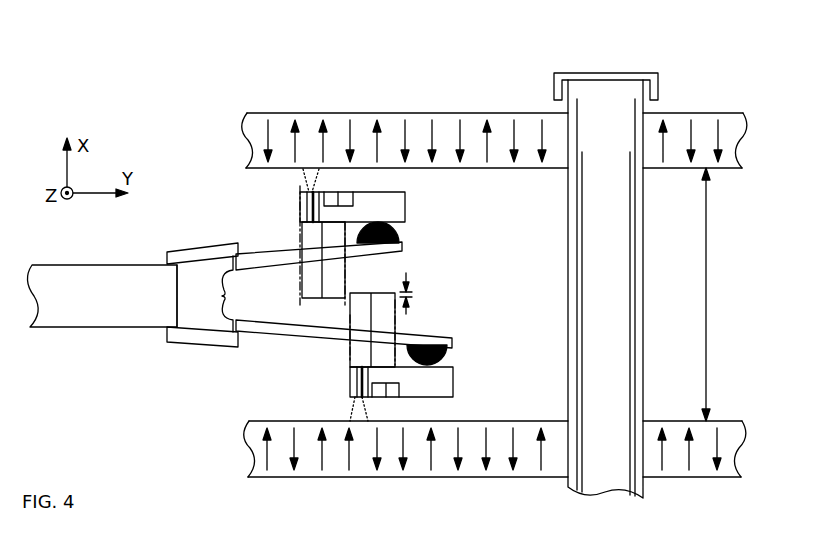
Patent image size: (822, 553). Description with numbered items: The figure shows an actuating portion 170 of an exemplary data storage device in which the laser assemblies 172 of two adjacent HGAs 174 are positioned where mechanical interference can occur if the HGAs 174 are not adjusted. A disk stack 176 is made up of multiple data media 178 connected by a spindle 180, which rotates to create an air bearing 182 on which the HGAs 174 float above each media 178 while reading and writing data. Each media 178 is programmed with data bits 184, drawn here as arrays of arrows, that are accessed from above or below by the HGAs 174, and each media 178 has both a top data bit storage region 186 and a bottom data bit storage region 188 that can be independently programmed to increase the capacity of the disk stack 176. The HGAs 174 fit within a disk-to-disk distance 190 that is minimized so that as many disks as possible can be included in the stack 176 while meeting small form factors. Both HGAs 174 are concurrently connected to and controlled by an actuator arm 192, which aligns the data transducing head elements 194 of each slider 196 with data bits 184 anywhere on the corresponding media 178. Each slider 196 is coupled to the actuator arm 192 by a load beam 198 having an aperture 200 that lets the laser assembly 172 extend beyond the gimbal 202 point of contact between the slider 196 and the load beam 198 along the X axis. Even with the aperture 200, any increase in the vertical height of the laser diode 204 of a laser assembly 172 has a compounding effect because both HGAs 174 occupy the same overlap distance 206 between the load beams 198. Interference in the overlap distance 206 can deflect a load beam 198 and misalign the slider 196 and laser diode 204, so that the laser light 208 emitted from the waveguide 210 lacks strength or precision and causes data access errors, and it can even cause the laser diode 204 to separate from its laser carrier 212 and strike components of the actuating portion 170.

The actuating portion 170 is at (160, 82).
The laser assembly 172 is at (298, 277).
The HGA 174 is at (440, 233).
The disk stack 176 is at (718, 72).
The data media 178 is at (246, 122).
The spindle 180 is at (606, 70).
The air bearing 182 is at (425, 180).
The data bits 184 is at (350, 113).
The top data bit storage region 186 is at (738, 112).
The bottom data bit storage region 188 is at (735, 168).
The disk-to-disk distance 190 is at (724, 294).
The actuator arm 192 is at (102, 296).
The data transducing head element 194 is at (338, 194).
The slider 196 is at (405, 197).
The load beam 198 is at (202, 295).
The aperture 200 is at (313, 250).
The gimbal 202 is at (400, 232).
The laser diode 204 is at (302, 235).
The overlap distance 206 is at (424, 293).
The laser light 208 is at (295, 186).
The waveguide 210 is at (300, 200).
The laser carrier 212 is at (347, 288).